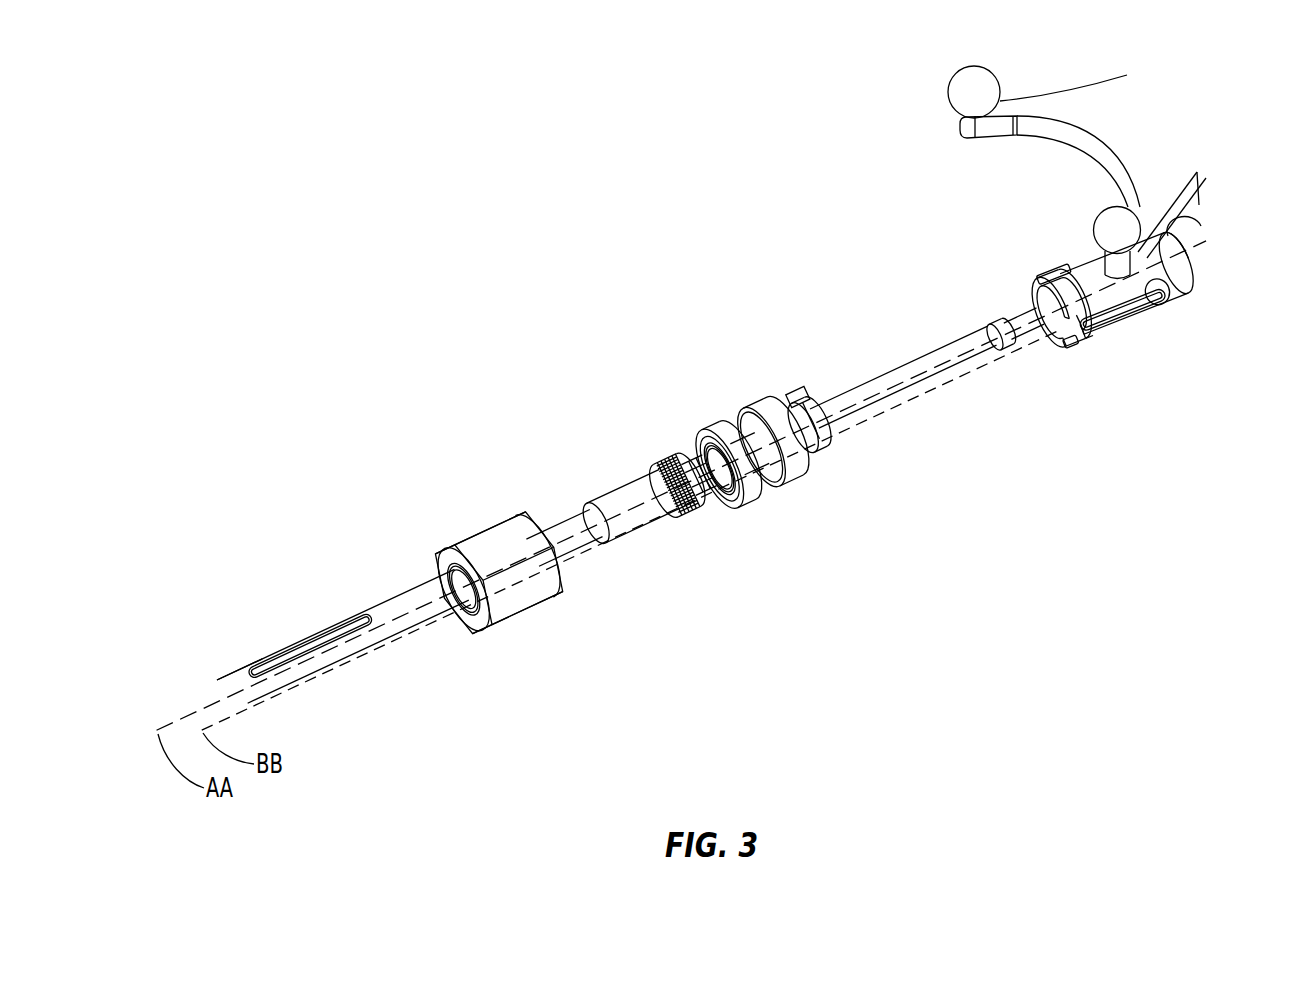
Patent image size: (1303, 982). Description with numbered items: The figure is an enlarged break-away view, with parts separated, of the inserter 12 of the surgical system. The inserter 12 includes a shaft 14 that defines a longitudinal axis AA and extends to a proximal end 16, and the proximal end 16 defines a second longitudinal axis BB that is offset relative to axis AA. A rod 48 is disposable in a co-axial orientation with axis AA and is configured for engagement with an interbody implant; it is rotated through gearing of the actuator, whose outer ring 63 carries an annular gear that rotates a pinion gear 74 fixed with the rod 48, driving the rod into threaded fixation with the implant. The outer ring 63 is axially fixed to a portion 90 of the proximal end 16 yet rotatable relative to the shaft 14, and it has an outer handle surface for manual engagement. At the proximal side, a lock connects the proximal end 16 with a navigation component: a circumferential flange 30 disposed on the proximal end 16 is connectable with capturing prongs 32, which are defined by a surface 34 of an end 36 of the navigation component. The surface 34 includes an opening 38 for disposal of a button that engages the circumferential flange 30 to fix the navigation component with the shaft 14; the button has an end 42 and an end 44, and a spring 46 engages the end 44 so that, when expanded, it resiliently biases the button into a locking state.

The inserter 12 is at (257, 607).
The shaft 14 is at (383, 612).
The proximal end 16 is at (657, 527).
The circumferential flange 30 is at (807, 403).
The capturing prongs 32 is at (1067, 277).
The surface 34 is at (1037, 307).
The end 36 is at (1077, 340).
The opening 38 is at (1170, 287).
The end 42 is at (1093, 330).
The end 44 is at (1140, 317).
The spring 46 is at (1167, 297).
The rod 48 is at (697, 457).
The outer ring 63 is at (520, 603).
The pinion gear 74 is at (663, 470).
The portion 90 is at (710, 433).